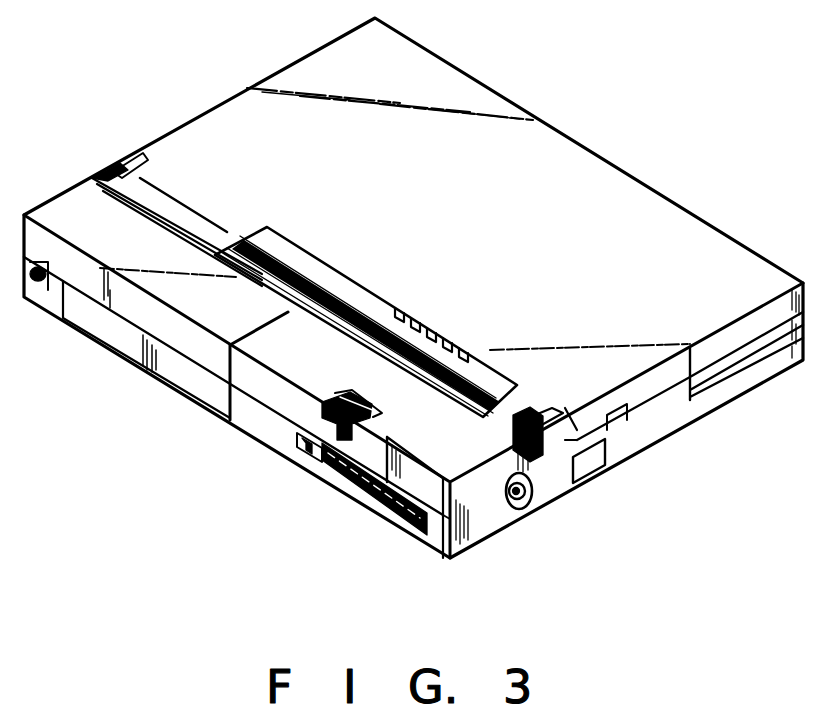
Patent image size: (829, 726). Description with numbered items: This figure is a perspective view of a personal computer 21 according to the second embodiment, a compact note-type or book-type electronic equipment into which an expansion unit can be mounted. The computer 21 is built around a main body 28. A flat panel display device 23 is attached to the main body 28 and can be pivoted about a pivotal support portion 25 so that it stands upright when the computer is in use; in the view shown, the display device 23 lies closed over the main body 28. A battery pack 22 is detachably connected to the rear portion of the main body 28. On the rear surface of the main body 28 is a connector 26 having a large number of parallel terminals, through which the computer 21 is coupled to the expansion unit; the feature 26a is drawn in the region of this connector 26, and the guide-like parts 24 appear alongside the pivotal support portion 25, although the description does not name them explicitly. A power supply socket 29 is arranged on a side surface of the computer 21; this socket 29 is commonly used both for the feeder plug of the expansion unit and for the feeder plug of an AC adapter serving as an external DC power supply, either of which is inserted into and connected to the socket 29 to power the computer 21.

The personal computer 21 is at (92, 174).
The battery pack 22 is at (278, 360).
The flat panel display device 23 is at (576, 158).
The guide rail 24 is at (182, 213).
The pivotal support portion 25 is at (128, 158).
The connector 26 is at (324, 487).
The slot 26a is at (373, 520).
The main body 28 is at (488, 530).
The power supply socket 29 is at (523, 510).